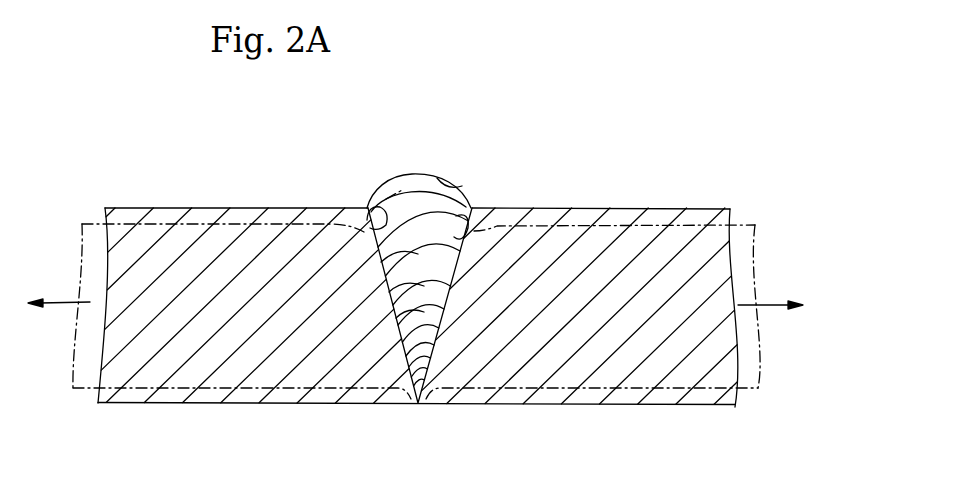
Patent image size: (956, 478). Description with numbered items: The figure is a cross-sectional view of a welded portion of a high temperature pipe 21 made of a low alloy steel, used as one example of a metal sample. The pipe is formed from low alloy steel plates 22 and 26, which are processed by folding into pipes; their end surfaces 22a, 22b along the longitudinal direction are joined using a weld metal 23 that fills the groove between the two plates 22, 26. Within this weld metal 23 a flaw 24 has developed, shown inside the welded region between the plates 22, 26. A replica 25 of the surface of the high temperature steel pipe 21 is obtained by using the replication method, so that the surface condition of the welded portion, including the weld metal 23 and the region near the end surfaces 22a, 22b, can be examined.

The high temperature pipe 21 is at (543, 148).
The low alloy steel plate 22 is at (255, 350).
The end surface 22a is at (372, 206).
The right toe of weld 22b is at (470, 206).
The weld metal 23 is at (409, 188).
The flaw 24 is at (440, 273).
The replica 25 is at (457, 187).
The low alloy steel plate 26 is at (653, 208).